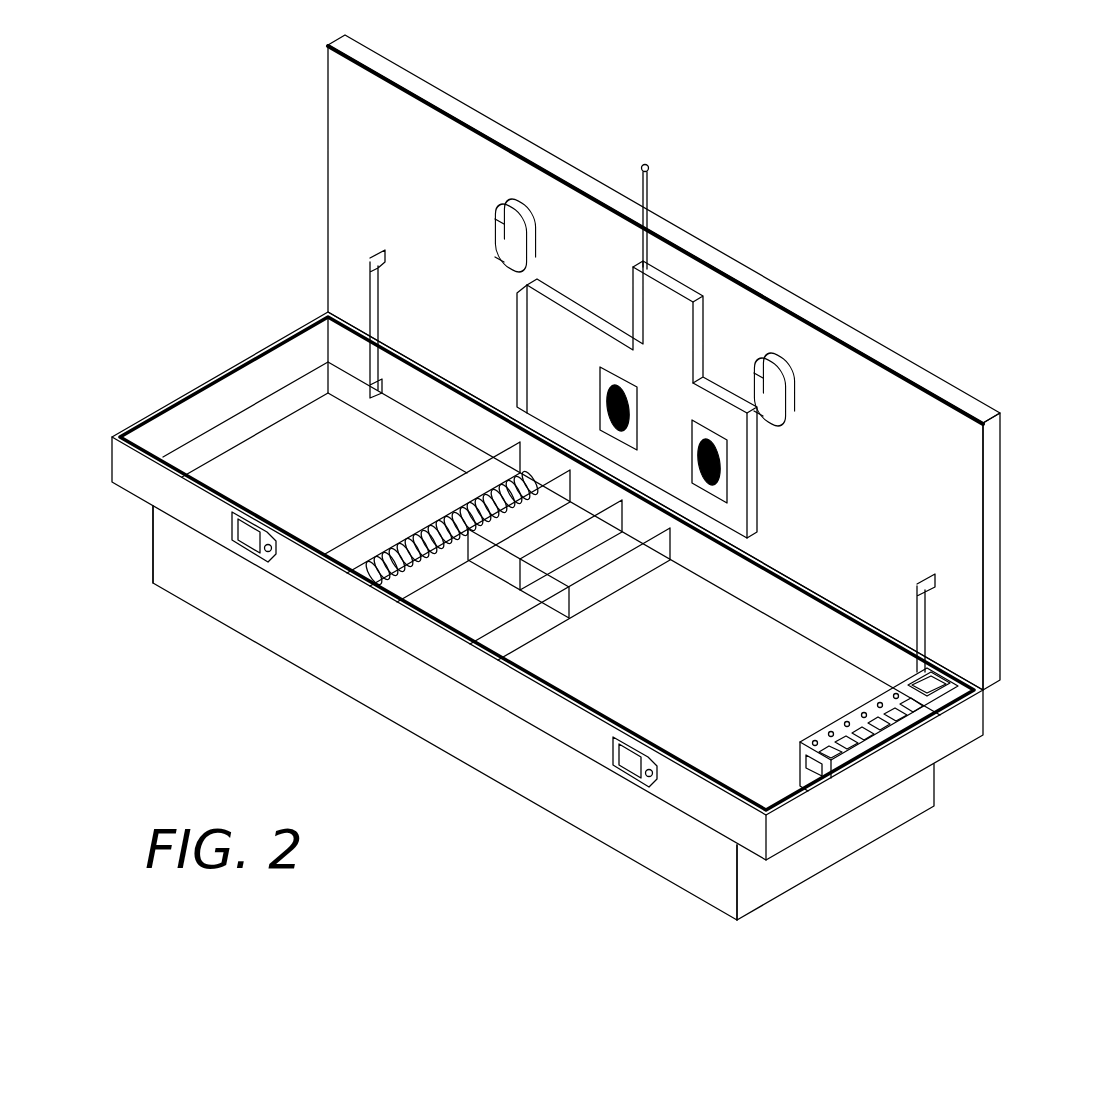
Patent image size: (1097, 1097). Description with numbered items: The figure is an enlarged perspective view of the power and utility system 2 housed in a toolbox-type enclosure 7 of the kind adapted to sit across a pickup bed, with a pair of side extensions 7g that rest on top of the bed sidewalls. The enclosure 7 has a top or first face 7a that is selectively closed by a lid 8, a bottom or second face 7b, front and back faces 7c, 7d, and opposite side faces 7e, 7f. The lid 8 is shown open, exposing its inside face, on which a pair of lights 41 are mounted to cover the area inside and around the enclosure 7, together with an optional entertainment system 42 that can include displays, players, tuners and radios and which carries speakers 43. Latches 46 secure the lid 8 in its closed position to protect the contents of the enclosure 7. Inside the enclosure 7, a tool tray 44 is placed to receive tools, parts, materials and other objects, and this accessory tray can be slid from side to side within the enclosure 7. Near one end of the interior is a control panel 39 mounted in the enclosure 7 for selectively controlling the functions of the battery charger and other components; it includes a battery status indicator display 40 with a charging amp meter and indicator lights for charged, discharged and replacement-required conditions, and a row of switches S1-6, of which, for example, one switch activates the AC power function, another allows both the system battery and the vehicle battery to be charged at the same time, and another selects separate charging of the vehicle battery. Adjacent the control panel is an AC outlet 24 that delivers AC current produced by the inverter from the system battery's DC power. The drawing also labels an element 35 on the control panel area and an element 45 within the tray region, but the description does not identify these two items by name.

The power and utility system 2 is at (597, 130).
The toolbox-type enclosure 7 is at (573, 608).
The top or first face 7a is at (395, 66).
The bottom or second face 7b is at (336, 683).
The front (third) face 7c is at (421, 699).
The back (fourth) face 7d is at (934, 786).
The side (fifth) face 7e is at (156, 538).
The opposite side (sixth) face 7f is at (770, 889).
The side extensions 7g is at (262, 352).
The lid 8 is at (614, 425).
The AC outlet 24 is at (800, 750).
The control panel 35 is at (850, 749).
The control panel 39 is at (907, 678).
The battery status indicator display 40 is at (960, 684).
The lights 41 is at (533, 213).
The entertainment system 42 is at (517, 329).
The speakers 43 is at (692, 428).
The tool tray 44 is at (574, 624).
The coiled cable 45 is at (436, 492).
The latches 46 is at (838, 323).
The switches S1-6 is at (917, 704).